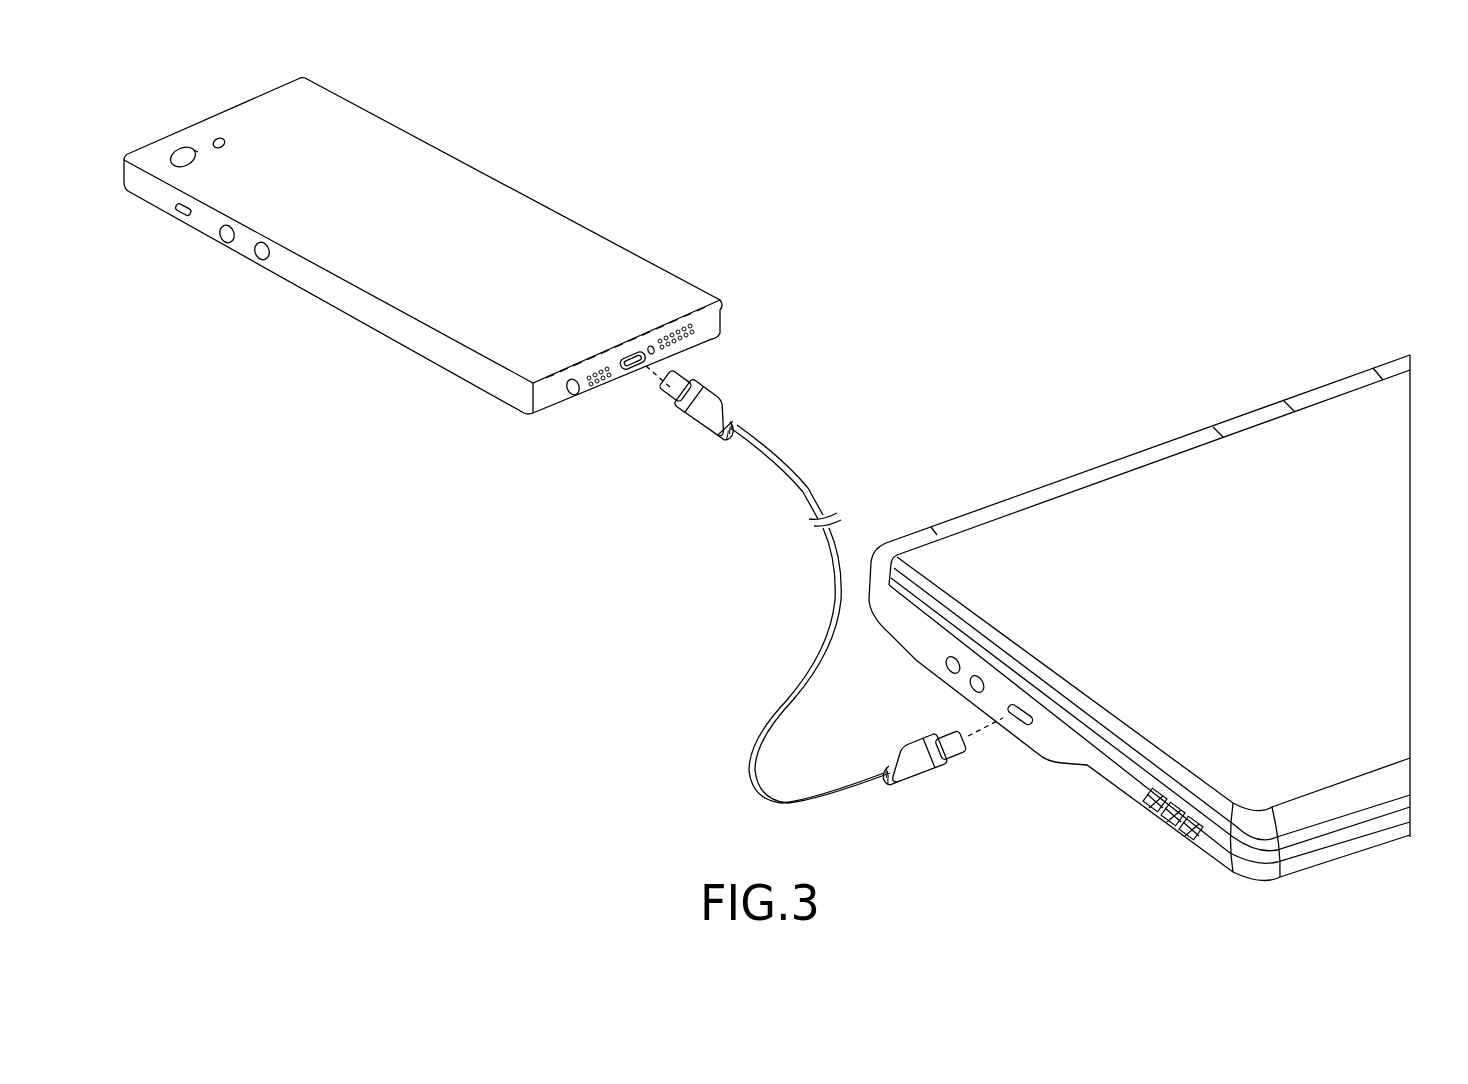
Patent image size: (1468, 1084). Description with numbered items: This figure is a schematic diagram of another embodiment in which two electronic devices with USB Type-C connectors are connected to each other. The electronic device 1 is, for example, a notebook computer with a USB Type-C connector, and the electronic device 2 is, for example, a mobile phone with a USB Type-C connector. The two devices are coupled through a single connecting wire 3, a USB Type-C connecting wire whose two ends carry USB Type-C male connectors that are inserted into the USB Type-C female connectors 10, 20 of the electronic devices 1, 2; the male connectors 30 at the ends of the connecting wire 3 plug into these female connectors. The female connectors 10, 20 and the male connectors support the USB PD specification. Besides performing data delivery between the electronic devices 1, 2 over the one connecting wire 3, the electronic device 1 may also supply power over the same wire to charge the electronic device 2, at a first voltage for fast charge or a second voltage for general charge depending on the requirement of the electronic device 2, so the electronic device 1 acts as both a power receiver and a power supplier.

The electronic device 1 is at (958, 506).
The electronic device 2 is at (610, 268).
The connecting wire 3 is at (823, 567).
The USB Type-C female connector 10 is at (1022, 723).
The USB Type-C female connector 20 is at (637, 369).
The connector 30 is at (707, 403).